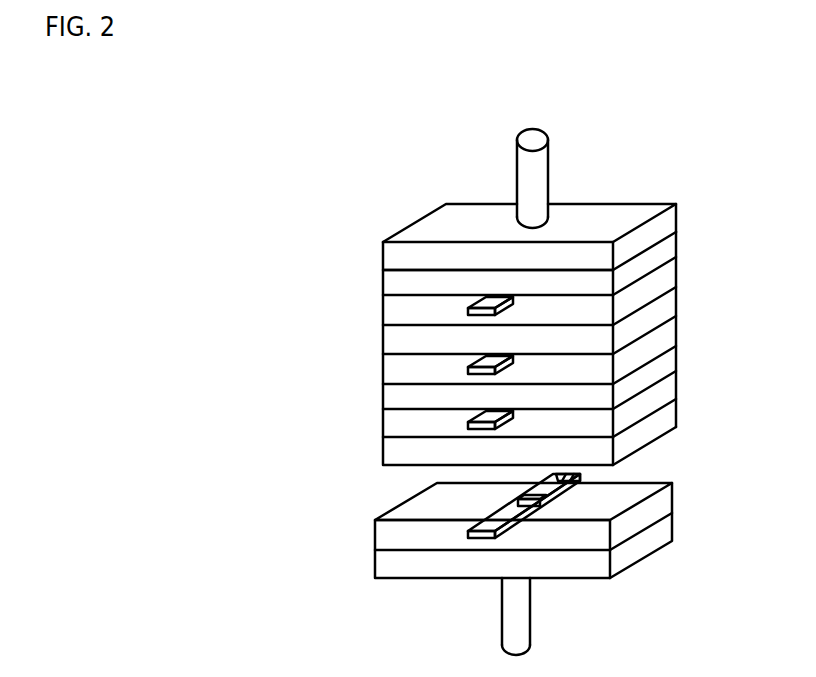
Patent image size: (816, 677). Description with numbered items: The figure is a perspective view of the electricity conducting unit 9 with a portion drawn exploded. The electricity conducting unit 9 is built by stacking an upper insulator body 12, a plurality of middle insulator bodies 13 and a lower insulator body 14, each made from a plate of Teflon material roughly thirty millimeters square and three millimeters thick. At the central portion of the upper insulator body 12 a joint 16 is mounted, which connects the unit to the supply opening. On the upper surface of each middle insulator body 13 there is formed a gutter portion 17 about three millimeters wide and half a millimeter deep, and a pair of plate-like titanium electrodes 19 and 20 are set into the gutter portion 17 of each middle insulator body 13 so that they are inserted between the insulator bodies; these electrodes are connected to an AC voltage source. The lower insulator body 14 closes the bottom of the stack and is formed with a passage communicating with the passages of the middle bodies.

The electricity conducting unit 9 is at (543, 367).
The upper insulator body 12 is at (408, 252).
The middle insulator body 13 is at (402, 302).
The lower insulator body 14 is at (405, 532).
The joint 16 is at (535, 178).
The gutter portion 17 is at (528, 507).
The plate-like titanium electrode 19 is at (478, 300).
The plate-like titanium electrode 20 is at (588, 466).